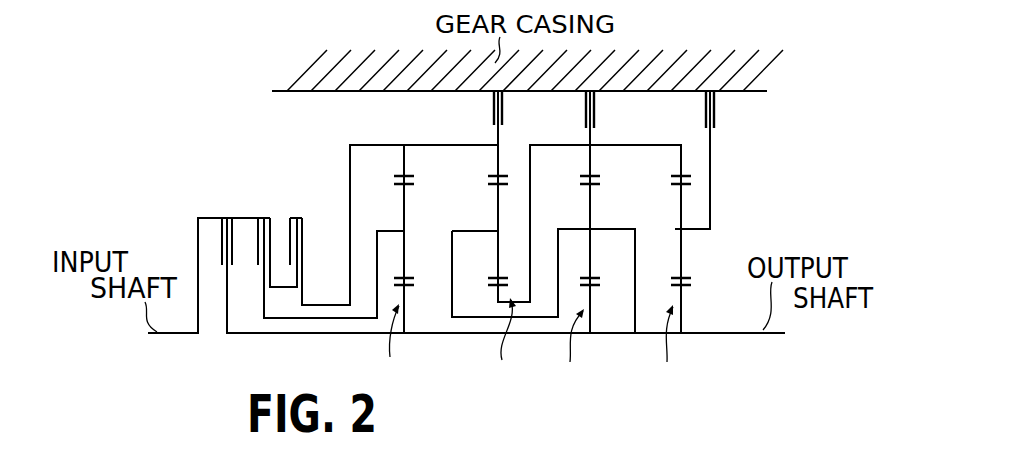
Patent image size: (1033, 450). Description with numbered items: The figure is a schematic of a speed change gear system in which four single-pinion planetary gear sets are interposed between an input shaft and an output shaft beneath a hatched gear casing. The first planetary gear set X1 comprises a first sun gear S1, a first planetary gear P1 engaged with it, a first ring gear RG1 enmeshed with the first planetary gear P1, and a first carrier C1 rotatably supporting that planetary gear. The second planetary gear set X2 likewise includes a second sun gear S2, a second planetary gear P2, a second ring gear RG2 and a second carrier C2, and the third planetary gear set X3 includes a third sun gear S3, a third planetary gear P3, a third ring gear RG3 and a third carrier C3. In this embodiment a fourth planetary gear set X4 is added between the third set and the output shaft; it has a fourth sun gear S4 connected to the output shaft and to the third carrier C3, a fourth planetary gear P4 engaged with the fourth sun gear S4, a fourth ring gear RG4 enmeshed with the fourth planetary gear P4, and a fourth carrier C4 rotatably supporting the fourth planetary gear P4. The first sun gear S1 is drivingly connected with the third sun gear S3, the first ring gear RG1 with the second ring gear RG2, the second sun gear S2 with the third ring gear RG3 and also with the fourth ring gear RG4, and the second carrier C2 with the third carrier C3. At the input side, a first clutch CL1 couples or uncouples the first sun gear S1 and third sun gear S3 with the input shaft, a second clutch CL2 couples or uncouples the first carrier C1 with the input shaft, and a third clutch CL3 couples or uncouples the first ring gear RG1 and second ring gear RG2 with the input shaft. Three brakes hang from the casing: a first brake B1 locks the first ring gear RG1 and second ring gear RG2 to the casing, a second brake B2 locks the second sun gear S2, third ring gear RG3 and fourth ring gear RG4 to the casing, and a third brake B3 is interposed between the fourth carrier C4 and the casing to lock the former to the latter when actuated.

The first clutch CL1 is at (235, 229).
The second clutch CL2 is at (273, 230).
The third clutch CL3 is at (312, 230).
The first brake B1 is at (494, 107).
The second brake B2 is at (595, 105).
The third brake B3 is at (716, 105).
The first ring gear RG1 is at (407, 162).
The second ring gear RG2 is at (499, 152).
The third ring gear RG3 is at (592, 160).
The fourth ring gear RG4 is at (686, 141).
The first carrier C1 is at (408, 231).
The second carrier C2 is at (498, 231).
The third carrier C3 is at (601, 229).
The fourth carrier C4 is at (677, 229).
The first planetary gear P1 is at (407, 255).
The second planetary gear P2 is at (497, 241).
The third planetary gear P3 is at (591, 255).
The fourth planetary gear P4 is at (683, 255).
The first sun gear S1 is at (407, 315).
The second sun gear S2 is at (497, 298).
The third sun gear S3 is at (592, 303).
The fourth sun gear S4 is at (683, 312).
The first planetary gear set X1 is at (397, 347).
The second planetary gear set X2 is at (499, 345).
The third planetary gear set X3 is at (574, 351).
The fourth planetary gear set X4 is at (669, 349).